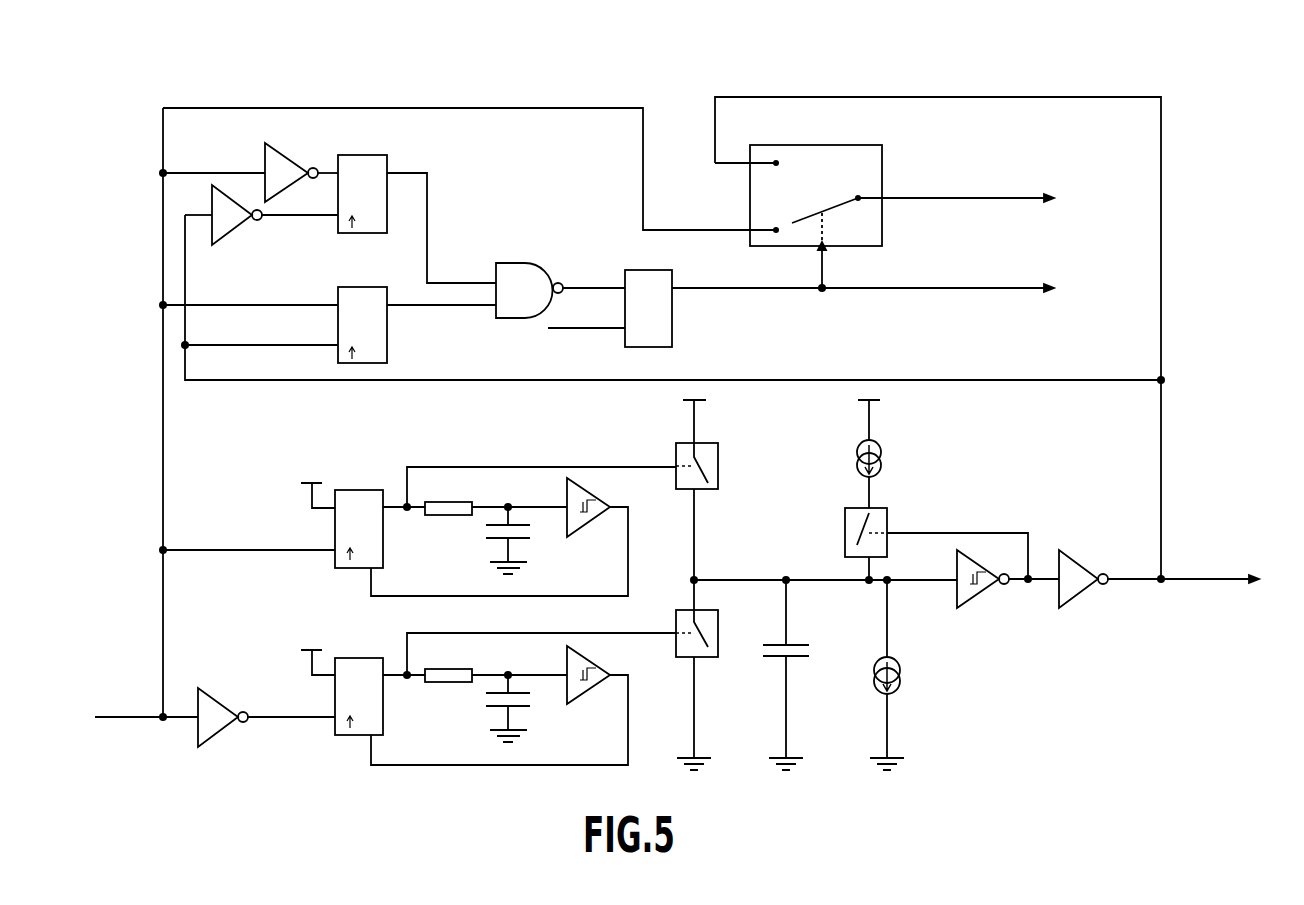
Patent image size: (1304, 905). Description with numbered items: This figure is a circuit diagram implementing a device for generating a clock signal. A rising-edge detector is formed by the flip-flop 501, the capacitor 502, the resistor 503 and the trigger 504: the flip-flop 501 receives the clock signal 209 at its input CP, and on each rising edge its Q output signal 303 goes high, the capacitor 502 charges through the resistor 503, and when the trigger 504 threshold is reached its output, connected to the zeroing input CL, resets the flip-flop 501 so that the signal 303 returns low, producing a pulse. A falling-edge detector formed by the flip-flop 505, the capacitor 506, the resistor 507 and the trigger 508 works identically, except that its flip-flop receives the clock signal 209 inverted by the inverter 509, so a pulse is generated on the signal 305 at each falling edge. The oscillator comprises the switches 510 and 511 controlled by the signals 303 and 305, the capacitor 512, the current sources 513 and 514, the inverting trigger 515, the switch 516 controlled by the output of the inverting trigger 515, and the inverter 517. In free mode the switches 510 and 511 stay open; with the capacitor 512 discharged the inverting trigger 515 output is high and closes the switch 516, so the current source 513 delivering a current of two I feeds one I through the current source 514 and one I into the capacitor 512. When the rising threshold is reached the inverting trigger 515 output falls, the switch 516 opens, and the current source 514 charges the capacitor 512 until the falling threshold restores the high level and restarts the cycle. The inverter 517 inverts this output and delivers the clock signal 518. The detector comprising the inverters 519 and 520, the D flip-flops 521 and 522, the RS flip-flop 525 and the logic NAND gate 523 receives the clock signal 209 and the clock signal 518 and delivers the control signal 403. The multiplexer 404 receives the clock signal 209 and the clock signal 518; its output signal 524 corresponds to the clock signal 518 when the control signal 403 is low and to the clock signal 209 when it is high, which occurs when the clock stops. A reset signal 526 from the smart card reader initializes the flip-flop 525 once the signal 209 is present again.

The clock signal 209 is at (120, 717).
The signal 303 is at (662, 467).
The signal 305 is at (662, 633).
The control signal 403 is at (1005, 288).
The multiplexer 404 is at (882, 165).
The flip-flop 501 is at (348, 490).
The capacitor 502 is at (530, 540).
The resistor 503 is at (450, 515).
The trigger 504 is at (592, 520).
The flip-flop 505 is at (348, 658).
The capacitor 506 is at (530, 708).
The resistor 507 is at (450, 682).
The trigger 508 is at (592, 688).
The inverter 509 is at (222, 705).
The switch 510 is at (718, 452).
The switch 511 is at (718, 660).
The capacitor 512 is at (800, 643).
The current source 513 is at (880, 448).
The current source 514 is at (900, 665).
The inverting trigger 515 is at (985, 592).
The switch 516 is at (887, 516).
The inverter 517 is at (1082, 565).
The clock signal 518 is at (1205, 579).
The inverter 519 is at (240, 238).
The inverter 520 is at (292, 152).
The D flip-flop 521 is at (338, 222).
The D flip-flop 522 is at (387, 353).
The logic NAND gate 523 is at (538, 268).
The output signal 524 is at (1000, 198).
The RS flip-flop 525 is at (672, 337).
The reset signal 526 is at (568, 330).